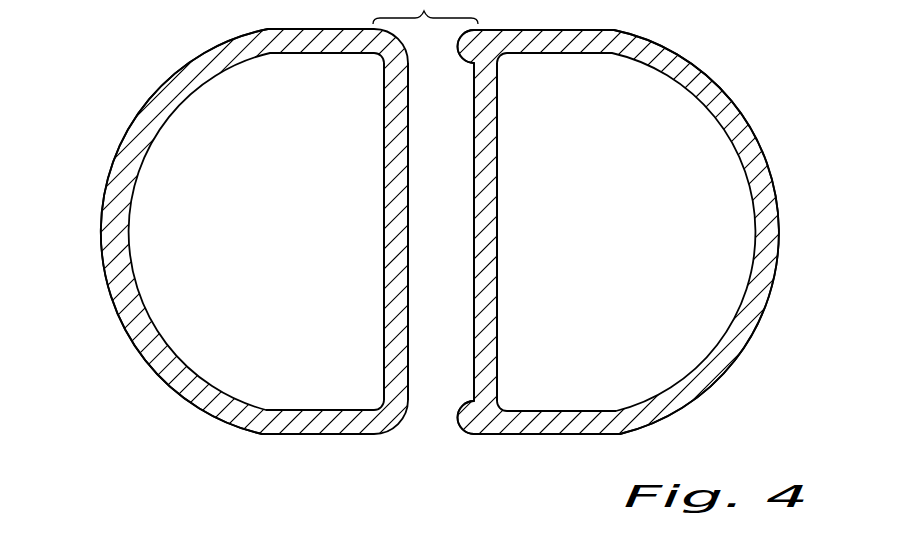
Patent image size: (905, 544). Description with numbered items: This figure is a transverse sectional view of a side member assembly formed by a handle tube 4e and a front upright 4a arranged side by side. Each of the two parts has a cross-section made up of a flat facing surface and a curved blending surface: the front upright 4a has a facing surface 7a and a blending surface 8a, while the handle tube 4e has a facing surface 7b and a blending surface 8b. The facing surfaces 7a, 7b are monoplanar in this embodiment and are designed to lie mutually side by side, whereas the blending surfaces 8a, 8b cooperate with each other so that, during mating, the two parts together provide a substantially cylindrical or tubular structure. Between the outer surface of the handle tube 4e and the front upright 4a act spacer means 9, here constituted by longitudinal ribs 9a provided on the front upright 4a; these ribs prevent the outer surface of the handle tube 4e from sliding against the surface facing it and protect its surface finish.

The front upright 4a is at (452, 272).
The handle tube 4e is at (452, 272).
The facing surface 7a is at (497, 233).
The facing surface 7b is at (384, 232).
The blending surface 8a is at (728, 97).
The blending surface 8b is at (148, 105).
The spacer means 9 is at (442, 382).
The longitudinal ribs 9a is at (461, 54).